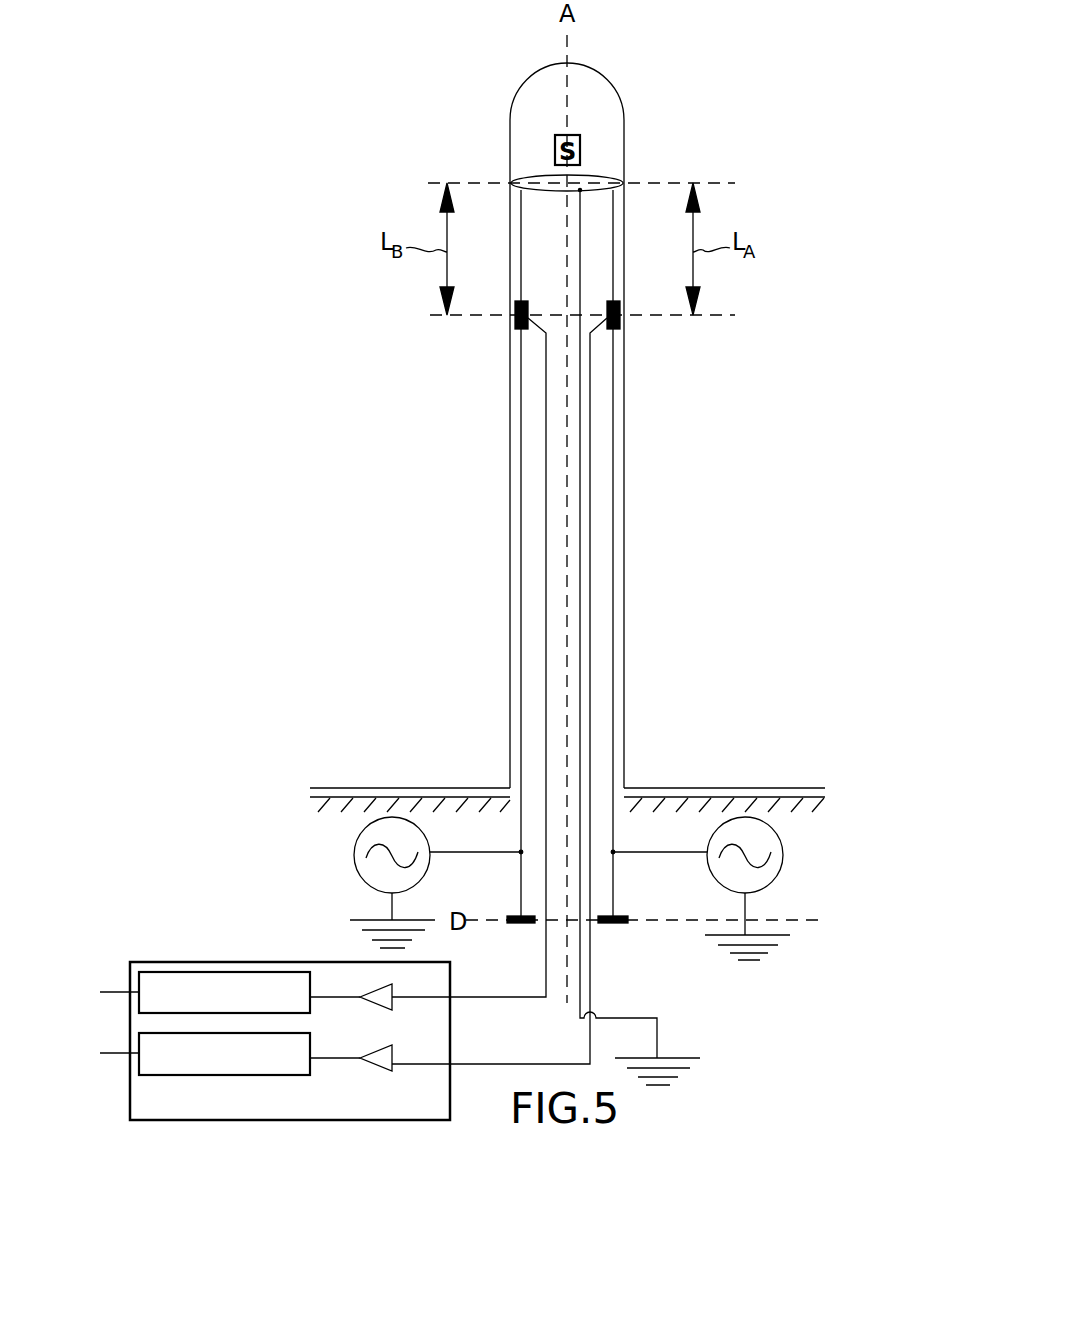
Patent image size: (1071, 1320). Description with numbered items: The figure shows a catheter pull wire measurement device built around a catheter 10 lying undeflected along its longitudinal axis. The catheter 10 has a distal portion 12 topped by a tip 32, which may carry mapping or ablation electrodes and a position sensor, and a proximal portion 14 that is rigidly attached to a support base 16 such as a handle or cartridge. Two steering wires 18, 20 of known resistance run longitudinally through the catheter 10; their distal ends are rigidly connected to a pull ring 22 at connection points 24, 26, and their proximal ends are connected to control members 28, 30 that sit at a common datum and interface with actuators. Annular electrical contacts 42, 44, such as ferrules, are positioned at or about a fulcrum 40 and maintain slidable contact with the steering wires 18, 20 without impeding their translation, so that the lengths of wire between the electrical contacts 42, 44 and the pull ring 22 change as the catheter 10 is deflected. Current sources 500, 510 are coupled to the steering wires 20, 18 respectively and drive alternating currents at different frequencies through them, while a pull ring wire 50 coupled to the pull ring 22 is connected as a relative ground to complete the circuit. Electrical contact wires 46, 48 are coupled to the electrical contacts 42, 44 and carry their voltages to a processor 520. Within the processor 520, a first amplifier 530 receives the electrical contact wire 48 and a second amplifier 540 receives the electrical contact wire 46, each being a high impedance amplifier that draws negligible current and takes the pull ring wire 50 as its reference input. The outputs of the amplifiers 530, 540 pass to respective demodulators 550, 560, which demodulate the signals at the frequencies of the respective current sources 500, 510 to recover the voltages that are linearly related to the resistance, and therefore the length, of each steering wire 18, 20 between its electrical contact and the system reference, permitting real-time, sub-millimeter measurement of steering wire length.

The catheter 10 is at (398, 175).
The distal portion 12 is at (636, 95).
The proximal portion 14 is at (650, 603).
The support base 16 is at (757, 788).
The steering wire 18 is at (613, 392).
The steering wire 20 is at (521, 607).
The pull ring 22 is at (612, 174).
The connection point 24 is at (617, 190).
The connection point 26 is at (518, 180).
The control member 28 is at (618, 915).
The control member 30 is at (514, 915).
The tip 32 is at (585, 77).
The fulcrum 40 is at (419, 315).
The electrical contact 42 is at (620, 311).
The electrical contact 44 is at (515, 311).
The electrical contact wire 46 is at (590, 510).
The electrical contact wire 48 is at (546, 455).
The pull ring wire 50 is at (580, 473).
The current source 500 is at (354, 855).
The current source 510 is at (783, 855).
The processor 520 is at (258, 962).
The first amplifier 530 is at (373, 989).
The second amplifier 540 is at (366, 1071).
The demodulator 550 is at (190, 972).
The demodulator 560 is at (192, 1075).